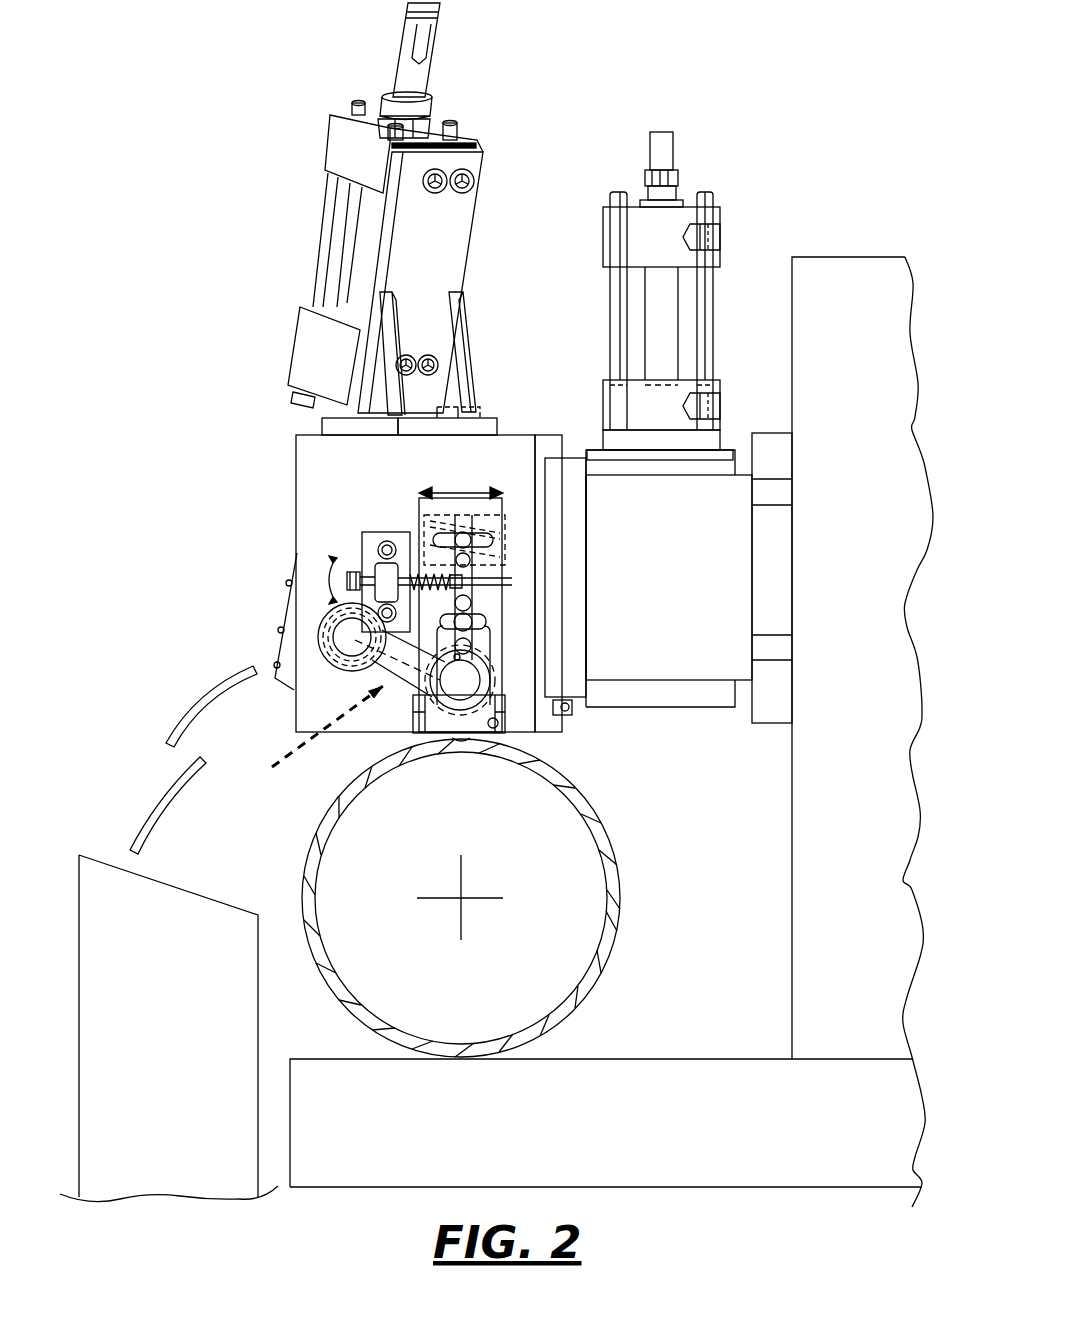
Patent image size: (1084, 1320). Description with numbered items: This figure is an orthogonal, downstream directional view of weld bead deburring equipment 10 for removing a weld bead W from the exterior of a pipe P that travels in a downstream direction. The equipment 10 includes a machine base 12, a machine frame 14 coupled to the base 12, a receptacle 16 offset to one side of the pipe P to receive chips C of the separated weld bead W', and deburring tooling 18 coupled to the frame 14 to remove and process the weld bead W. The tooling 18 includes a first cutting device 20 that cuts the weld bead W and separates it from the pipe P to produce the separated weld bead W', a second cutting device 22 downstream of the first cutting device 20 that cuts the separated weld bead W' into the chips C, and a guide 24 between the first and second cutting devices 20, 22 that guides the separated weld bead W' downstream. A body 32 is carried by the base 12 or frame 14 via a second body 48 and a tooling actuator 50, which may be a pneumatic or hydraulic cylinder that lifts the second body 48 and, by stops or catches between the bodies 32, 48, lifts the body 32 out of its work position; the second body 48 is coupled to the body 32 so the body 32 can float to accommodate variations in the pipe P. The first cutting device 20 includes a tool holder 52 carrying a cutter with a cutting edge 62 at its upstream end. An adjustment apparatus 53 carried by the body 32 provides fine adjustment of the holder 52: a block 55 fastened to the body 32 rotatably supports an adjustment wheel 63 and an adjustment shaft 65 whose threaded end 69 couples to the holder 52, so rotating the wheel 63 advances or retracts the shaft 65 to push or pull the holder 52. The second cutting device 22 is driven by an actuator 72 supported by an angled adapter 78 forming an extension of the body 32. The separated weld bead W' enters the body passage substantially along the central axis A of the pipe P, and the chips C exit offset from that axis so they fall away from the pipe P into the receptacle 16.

The weld bead deburring equipment 10 is at (496, 605).
The machine base 12 is at (606, 1123).
The machine frame 14 is at (862, 732).
The receptacle 16 is at (169, 1028).
The deburring tooling 18 is at (516, 292).
The first cutting device 20 is at (390, 744).
The second cutting device 22 is at (262, 598).
The guide 24 is at (312, 734).
The body 32 is at (277, 470).
The second body 48 is at (720, 738).
The tooling actuator 50 is at (741, 220).
The tool holder 52 is at (500, 500).
The adjustment apparatus 53 is at (373, 500).
The block 55 is at (365, 533).
The cutting edge 62 is at (347, 582).
The adjustment wheel 63 is at (388, 580).
The adjustment shaft 65 is at (405, 576).
The threaded end 69 is at (457, 586).
The actuator 72 is at (330, 100).
The adapter 78 is at (494, 182).
The central axis A is at (461, 898).
The chips C is at (165, 787).
The pipe P is at (578, 792).
The weld bead W is at (454, 774).
The separated weld bead W' is at (544, 628).